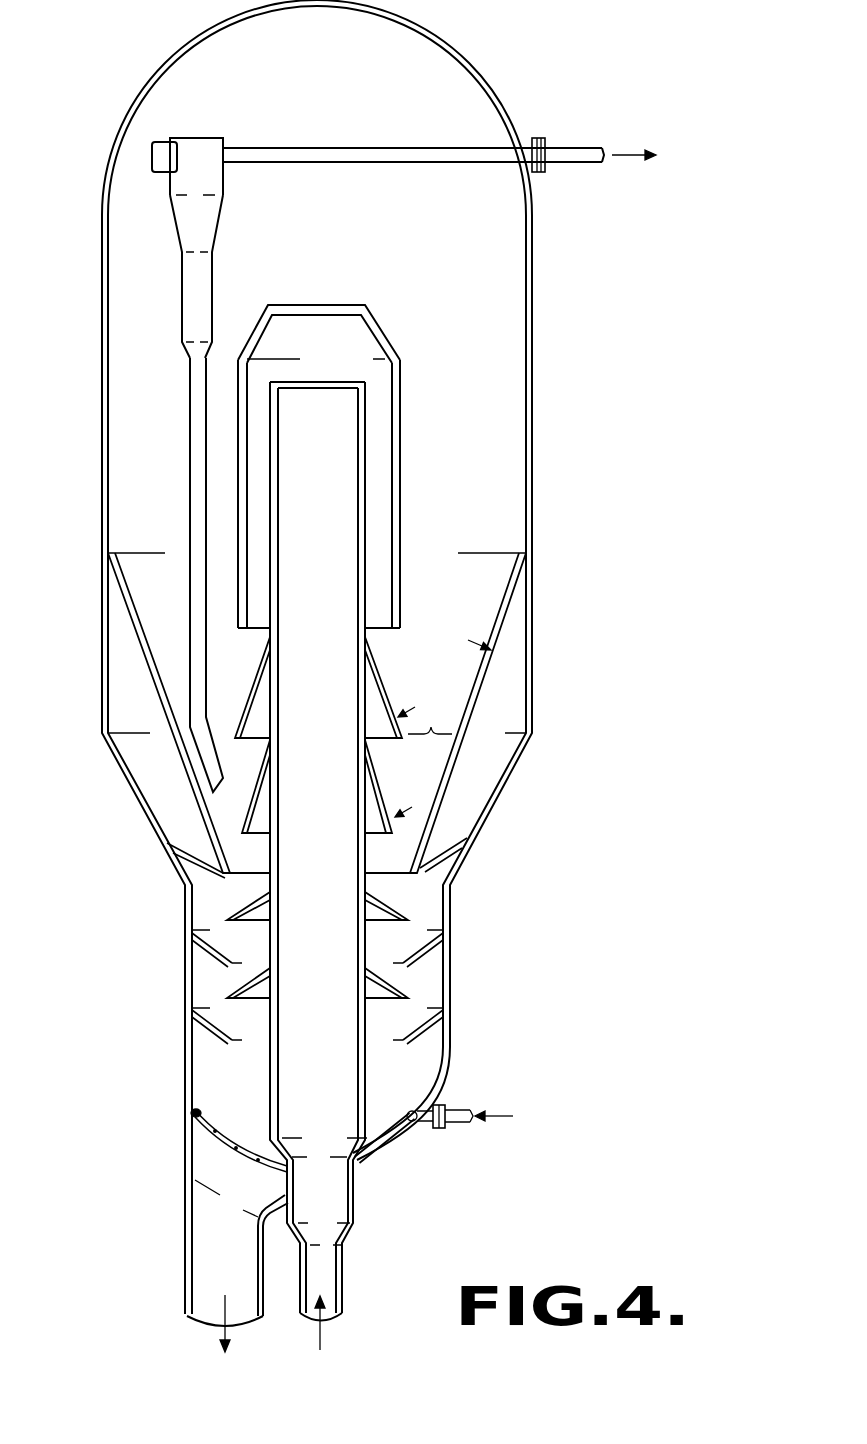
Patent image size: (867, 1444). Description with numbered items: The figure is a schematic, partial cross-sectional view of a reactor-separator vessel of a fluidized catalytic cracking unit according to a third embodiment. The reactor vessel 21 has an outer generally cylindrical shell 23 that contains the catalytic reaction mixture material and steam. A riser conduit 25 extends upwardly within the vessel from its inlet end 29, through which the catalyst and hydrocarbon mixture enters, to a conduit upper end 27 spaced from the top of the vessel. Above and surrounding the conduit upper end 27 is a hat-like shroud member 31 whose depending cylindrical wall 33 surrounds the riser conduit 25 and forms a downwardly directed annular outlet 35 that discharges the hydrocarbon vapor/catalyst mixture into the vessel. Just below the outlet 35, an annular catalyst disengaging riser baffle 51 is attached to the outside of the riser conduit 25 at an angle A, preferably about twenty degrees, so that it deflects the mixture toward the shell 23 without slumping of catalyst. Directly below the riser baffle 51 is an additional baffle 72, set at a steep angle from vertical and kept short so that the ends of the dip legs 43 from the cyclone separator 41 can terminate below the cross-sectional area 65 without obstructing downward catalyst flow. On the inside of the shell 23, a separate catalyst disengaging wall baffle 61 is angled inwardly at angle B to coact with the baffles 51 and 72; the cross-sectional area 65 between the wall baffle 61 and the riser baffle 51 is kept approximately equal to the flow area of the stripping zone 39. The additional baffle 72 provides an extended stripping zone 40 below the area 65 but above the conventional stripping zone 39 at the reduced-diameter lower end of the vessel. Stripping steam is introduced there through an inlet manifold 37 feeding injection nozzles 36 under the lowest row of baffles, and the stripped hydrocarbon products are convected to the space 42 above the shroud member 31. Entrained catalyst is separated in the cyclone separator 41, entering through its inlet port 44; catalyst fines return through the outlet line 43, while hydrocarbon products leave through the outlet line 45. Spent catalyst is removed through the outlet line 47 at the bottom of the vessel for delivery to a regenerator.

The reactor vessel 21 is at (182, 44).
The shell 23 is at (102, 356).
The inlet port 44 is at (170, 140).
The cyclone separator 41 is at (213, 215).
The outlet line 45 is at (578, 148).
The outlet line 43 is at (190, 420).
The shroud member 31 is at (368, 310).
The cylindrical wall 33 is at (400, 410).
The annular outlet 35 is at (398, 632).
The space 42 is at (470, 456).
The conduit upper end 27 is at (355, 380).
The riser baffle 51 is at (388, 700).
The additional baffle 72 is at (382, 789).
The wall baffle 61 is at (145, 662).
The cross-sectional area 65 is at (435, 727).
The extended stripping zone 40 is at (403, 848).
The stripping zone 39 is at (423, 975).
The riser conduit 25 is at (272, 1093).
The injection nozzle 36 is at (388, 1122).
The inlet manifold 37 is at (407, 1133).
The inlet end 29 is at (207, 1320).
The outlet line 47 is at (340, 1313).
The angle A is at (352, 726).
The angle B is at (544, 652).